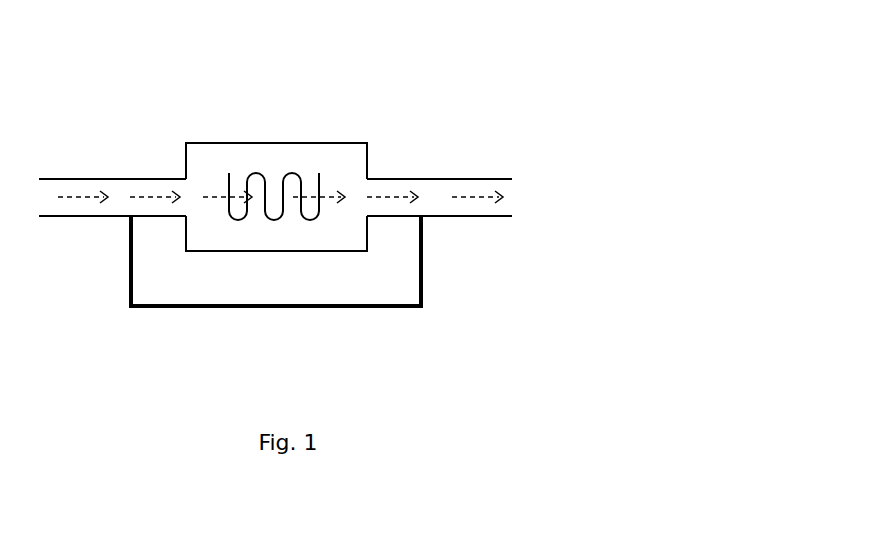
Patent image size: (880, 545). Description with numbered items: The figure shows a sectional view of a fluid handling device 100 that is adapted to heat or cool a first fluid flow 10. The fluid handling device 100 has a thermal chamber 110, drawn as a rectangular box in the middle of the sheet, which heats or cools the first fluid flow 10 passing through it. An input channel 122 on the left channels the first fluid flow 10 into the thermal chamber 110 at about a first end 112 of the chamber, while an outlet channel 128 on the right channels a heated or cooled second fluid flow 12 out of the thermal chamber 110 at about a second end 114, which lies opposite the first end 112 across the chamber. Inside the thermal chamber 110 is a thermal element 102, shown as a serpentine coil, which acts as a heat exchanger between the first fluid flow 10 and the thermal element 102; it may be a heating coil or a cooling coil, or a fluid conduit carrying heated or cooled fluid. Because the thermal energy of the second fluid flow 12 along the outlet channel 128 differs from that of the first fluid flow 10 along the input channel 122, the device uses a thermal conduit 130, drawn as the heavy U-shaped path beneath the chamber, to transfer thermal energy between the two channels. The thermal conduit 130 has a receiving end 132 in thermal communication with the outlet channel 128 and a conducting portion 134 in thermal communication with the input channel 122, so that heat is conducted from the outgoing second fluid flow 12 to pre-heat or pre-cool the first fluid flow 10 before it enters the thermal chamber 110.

The fluid handling device 100 is at (552, 27).
The first fluid flow 10 is at (95, 198).
The second fluid flow 12 is at (465, 196).
The thermal element 102 is at (252, 173).
The thermal chamber 110 is at (320, 152).
The first end 112 is at (186, 179).
The second end 114 is at (367, 179).
The input channel 122 is at (91, 179).
The outlet channel 128 is at (473, 216).
The thermal conduit 130 is at (397, 306).
The receiving end 132 is at (425, 216).
The conducting portion 134 is at (130, 218).